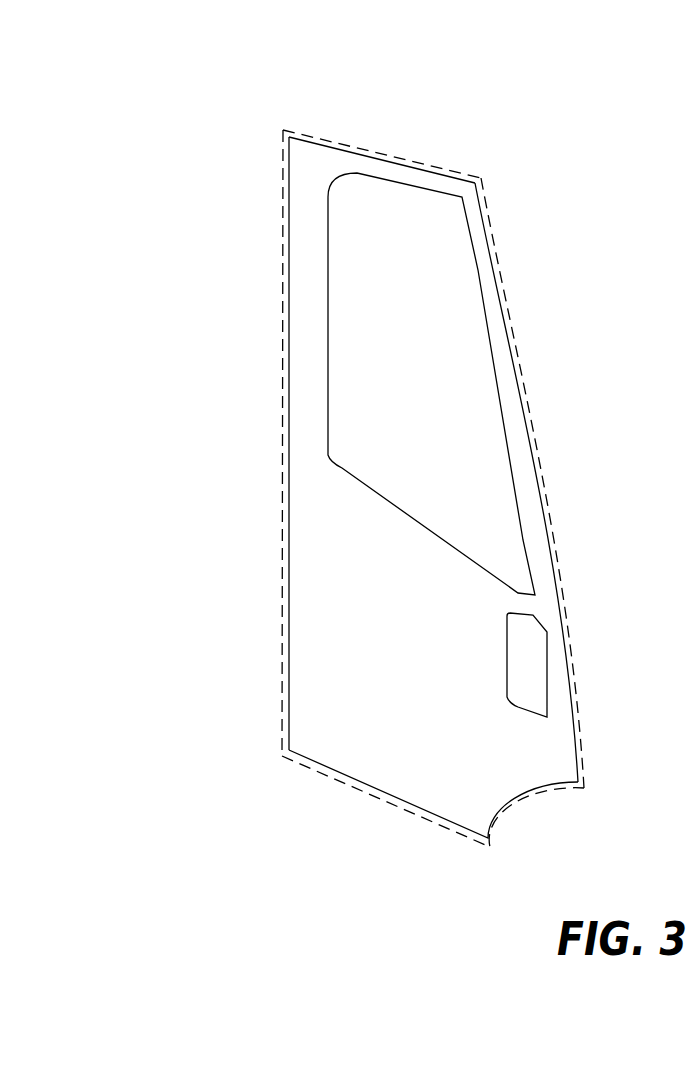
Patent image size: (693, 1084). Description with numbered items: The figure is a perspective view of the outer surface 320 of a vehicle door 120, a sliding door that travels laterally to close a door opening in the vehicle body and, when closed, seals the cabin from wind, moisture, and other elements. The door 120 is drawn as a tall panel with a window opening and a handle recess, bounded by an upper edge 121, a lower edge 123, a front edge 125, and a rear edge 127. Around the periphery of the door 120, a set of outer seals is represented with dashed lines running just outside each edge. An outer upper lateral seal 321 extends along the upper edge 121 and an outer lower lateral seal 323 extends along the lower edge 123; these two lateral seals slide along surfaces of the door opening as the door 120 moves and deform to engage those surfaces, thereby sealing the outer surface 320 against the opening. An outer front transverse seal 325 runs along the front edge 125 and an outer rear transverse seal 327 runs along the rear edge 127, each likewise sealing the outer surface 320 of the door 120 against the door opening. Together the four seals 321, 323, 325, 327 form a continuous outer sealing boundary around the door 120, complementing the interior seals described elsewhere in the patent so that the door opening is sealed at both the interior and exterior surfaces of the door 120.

The door 120 is at (392, 478).
The upper edge 121 is at (452, 167).
The lower edge 123 is at (346, 795).
The front edge 125 is at (567, 560).
The rear edge 127 is at (270, 535).
The outer surface 320 is at (405, 488).
The outer upper lateral seal 321 is at (377, 155).
The outer lower lateral seal 323 is at (417, 813).
The outer front transverse seal 325 is at (538, 472).
The outer rear transverse seal 327 is at (283, 450).